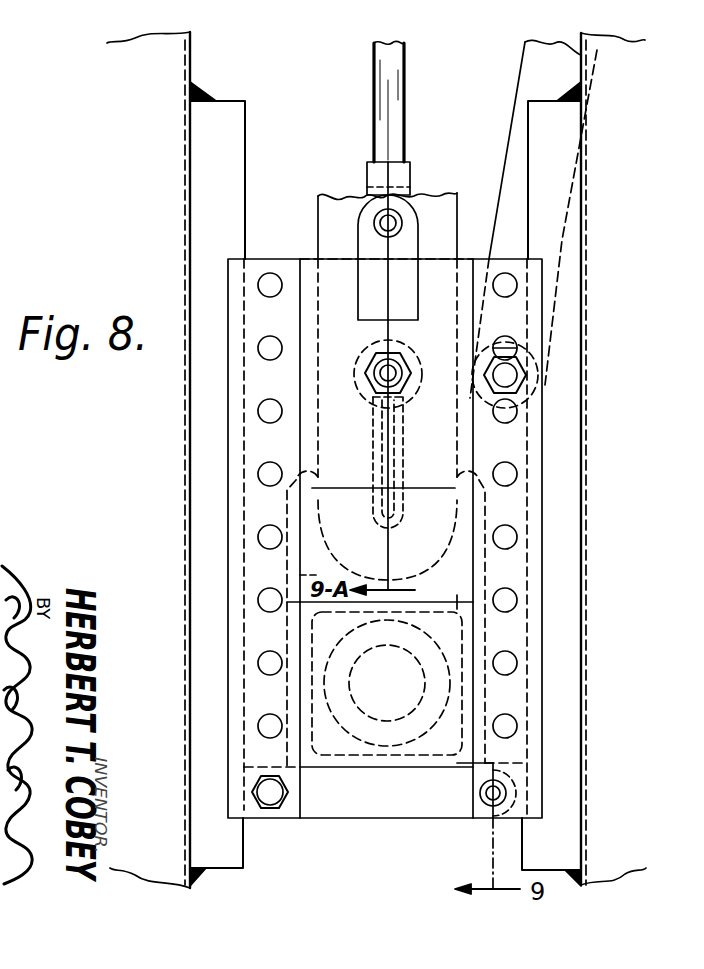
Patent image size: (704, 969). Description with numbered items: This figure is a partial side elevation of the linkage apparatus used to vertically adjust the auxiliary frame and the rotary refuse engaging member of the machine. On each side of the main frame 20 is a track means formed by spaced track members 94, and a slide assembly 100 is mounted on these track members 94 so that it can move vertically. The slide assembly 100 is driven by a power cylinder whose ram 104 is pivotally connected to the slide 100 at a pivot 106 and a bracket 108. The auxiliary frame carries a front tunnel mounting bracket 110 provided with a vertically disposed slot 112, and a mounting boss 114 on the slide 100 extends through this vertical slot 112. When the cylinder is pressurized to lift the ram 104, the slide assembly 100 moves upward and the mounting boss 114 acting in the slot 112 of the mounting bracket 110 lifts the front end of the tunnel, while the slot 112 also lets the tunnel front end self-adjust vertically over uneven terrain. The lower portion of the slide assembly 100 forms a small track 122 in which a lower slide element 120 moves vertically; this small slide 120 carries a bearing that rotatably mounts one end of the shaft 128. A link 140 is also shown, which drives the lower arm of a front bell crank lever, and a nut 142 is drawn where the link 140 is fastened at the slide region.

The main frame 20 is at (192, 79).
The track members 94 is at (203, 198).
The slide assembly 100 is at (461, 233).
The ram 104 is at (374, 72).
The pivot 106 is at (368, 187).
The bracket 108 is at (360, 215).
The front tunnel mounting bracket 110 is at (423, 195).
The vertical slot 112 is at (395, 458).
The mounting boss 114 is at (355, 357).
The lower slide element 120 is at (437, 602).
The small track 122 is at (305, 573).
The shaft 128 is at (365, 715).
The link 140 is at (512, 153).
The nut 142 is at (520, 377).